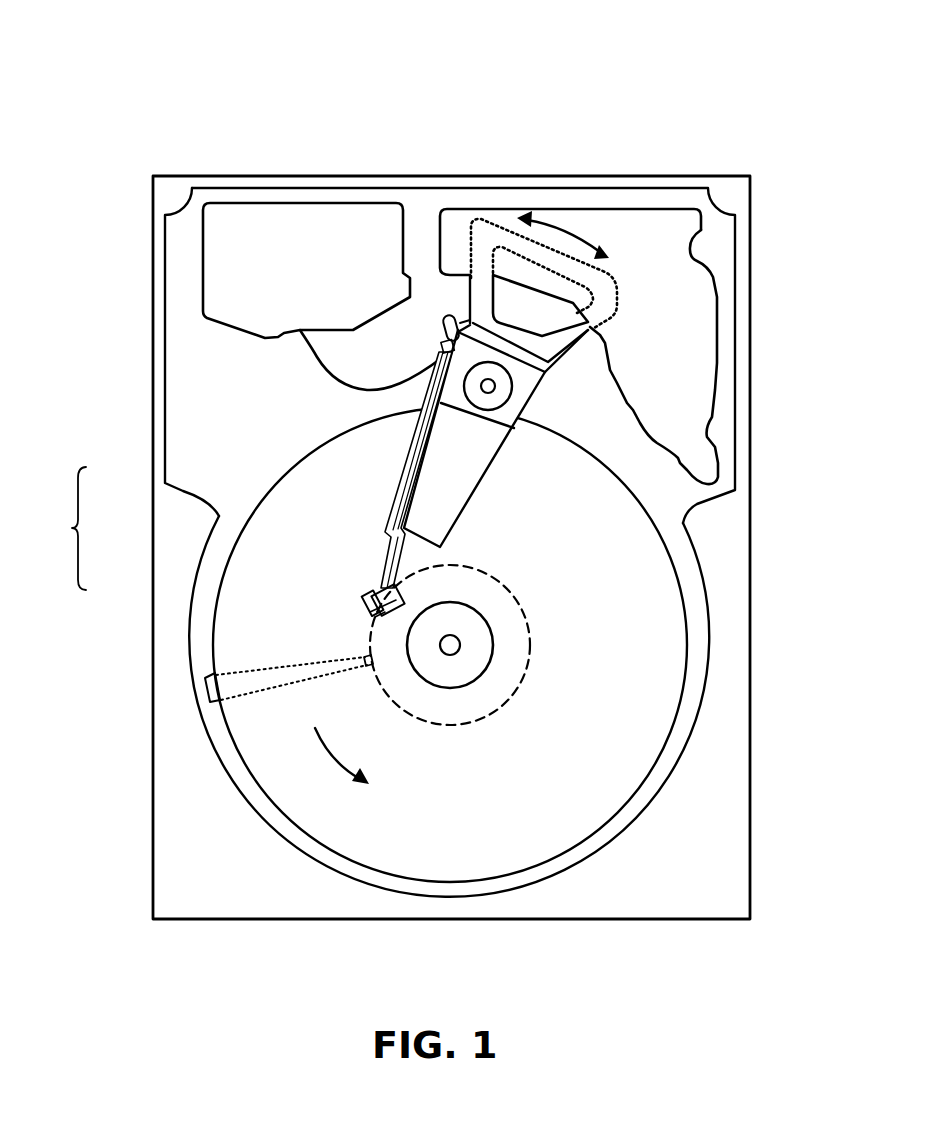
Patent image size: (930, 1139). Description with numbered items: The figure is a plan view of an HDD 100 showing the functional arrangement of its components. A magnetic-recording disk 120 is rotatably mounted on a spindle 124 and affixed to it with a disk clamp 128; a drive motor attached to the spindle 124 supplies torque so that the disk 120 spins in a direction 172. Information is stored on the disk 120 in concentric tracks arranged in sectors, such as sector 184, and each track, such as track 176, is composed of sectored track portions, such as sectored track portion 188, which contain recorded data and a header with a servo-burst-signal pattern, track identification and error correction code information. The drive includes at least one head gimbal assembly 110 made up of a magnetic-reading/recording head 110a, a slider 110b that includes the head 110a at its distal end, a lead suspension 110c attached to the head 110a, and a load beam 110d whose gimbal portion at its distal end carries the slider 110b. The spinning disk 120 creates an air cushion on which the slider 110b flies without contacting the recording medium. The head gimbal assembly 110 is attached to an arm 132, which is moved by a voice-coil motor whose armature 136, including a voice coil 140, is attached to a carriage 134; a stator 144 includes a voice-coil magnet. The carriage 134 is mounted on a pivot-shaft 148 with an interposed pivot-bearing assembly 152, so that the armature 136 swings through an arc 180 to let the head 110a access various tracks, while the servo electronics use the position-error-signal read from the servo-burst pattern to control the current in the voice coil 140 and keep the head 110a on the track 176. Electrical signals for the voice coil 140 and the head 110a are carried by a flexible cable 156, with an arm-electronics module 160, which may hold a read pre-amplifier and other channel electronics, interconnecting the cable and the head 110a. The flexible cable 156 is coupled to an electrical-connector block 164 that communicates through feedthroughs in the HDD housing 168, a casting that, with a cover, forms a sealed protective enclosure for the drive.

The HDD 100 is at (86, 62).
The head gimbal assembly 110 is at (57, 528).
The magnetic-reading/recording head 110a is at (367, 590).
The slider 110b is at (393, 580).
The lead suspension 110c is at (393, 557).
The load beam 110d is at (397, 533).
The magnetic-recording disk 120 is at (620, 600).
The spindle 124 is at (460, 645).
The disk clamp 128 is at (475, 660).
The arm 132 is at (442, 492).
The carriage 134 is at (505, 416).
The armature 136 is at (468, 326).
The voice coil 140 is at (483, 283).
The stator 144 is at (683, 293).
The pivot-shaft 148 is at (497, 385).
The pivot-bearing assembly 152 is at (500, 397).
The flexible cable 156 is at (323, 360).
The arm-electronics module 160 is at (443, 353).
The electrical-connector block 164 is at (227, 270).
The HDD housing 168 is at (733, 189).
The direction 172 is at (347, 757).
The track 176 is at (525, 605).
The arc 180 is at (562, 228).
The sector 184 is at (206, 688).
The sectored track portion 188 is at (361, 655).